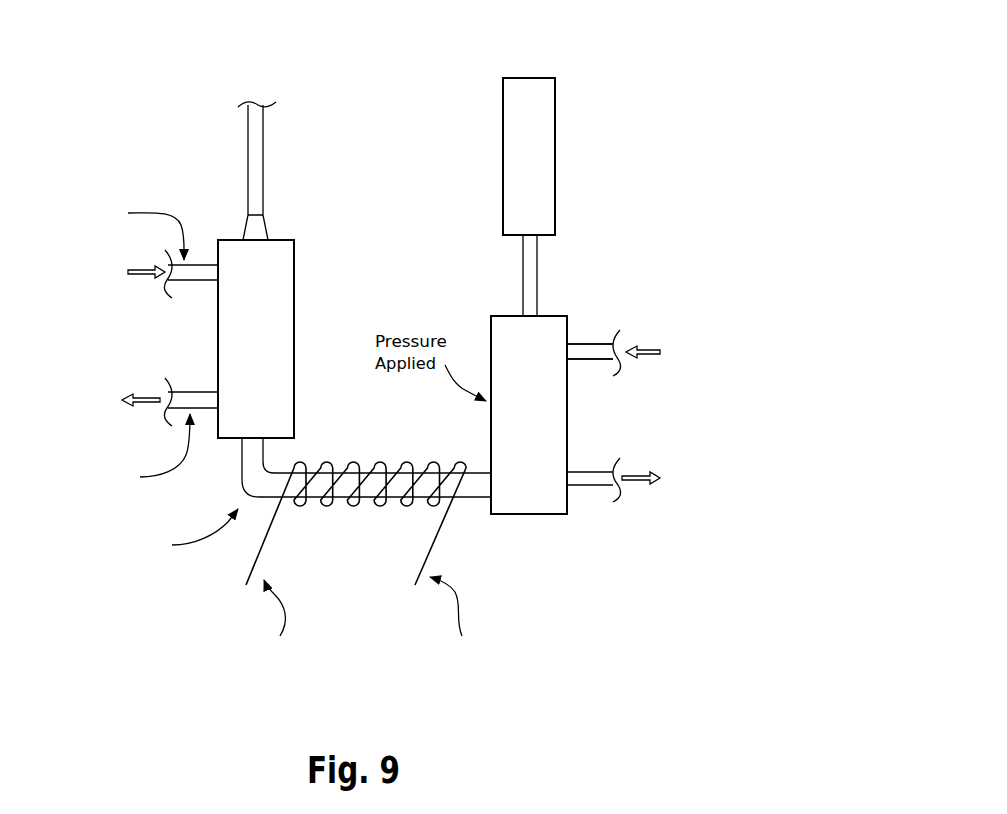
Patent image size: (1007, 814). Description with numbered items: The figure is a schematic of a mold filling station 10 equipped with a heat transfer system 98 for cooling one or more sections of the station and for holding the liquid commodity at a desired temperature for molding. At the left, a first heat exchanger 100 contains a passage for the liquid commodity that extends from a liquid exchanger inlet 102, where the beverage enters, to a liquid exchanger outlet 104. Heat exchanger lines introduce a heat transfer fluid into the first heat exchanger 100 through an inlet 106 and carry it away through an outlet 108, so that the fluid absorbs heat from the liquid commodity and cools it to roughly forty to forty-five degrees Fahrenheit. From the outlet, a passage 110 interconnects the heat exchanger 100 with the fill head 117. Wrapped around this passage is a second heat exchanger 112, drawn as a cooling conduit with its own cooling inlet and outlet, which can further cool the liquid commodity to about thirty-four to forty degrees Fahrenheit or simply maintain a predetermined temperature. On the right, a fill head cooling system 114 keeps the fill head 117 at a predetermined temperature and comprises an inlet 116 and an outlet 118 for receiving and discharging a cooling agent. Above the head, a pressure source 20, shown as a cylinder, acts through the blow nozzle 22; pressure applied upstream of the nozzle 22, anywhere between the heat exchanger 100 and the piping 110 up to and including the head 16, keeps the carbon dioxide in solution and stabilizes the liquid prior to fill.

The mold station 10 is at (633, 70).
The heat transfer system 98 is at (173, 185).
The first heat exchanger 100 is at (294, 290).
The liquid exchanger inlet 102 is at (264, 147).
The liquid exchanger outlet 104 is at (263, 452).
The inlet 106 is at (196, 282).
The outlet 108 is at (196, 391).
The passage 110 is at (391, 467).
The second heat exchanger 112 is at (272, 523).
The fill head cooling system 114 is at (586, 320).
The inlet 116 is at (585, 360).
The fill head 117 is at (567, 423).
The outlet 118 is at (596, 471).
The pressure source 20 is at (556, 153).
The blow nozzle 22 is at (537, 259).
The mold cavity 16 is at (548, 516).